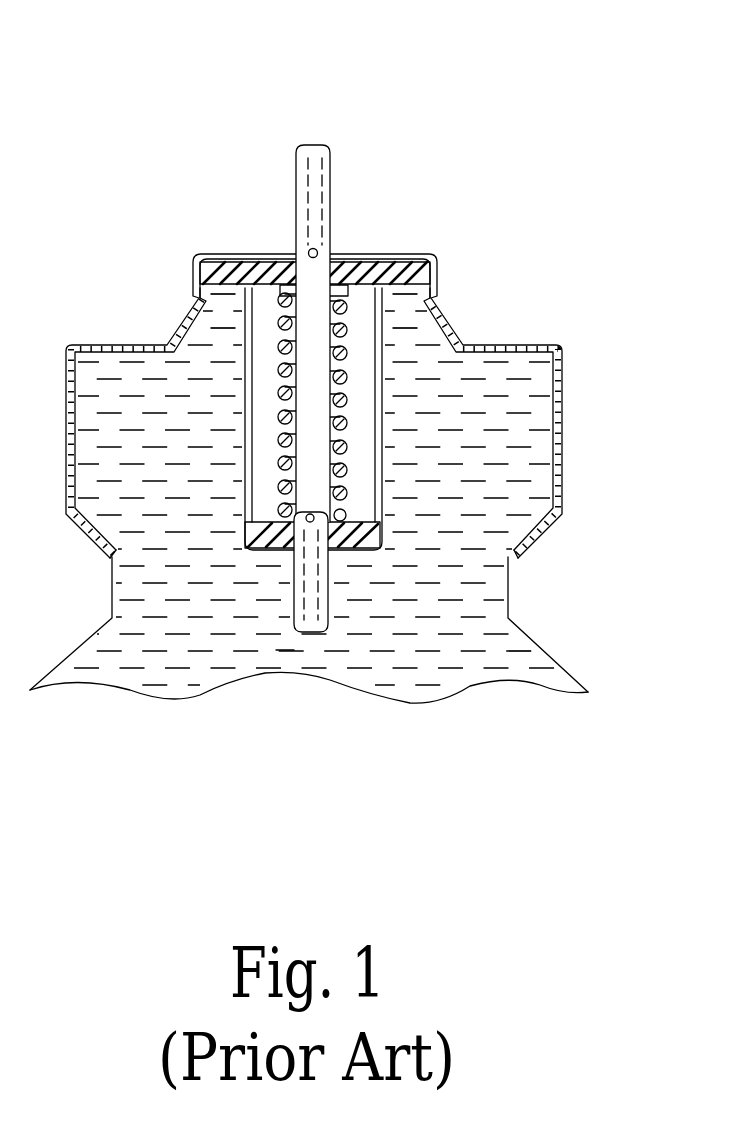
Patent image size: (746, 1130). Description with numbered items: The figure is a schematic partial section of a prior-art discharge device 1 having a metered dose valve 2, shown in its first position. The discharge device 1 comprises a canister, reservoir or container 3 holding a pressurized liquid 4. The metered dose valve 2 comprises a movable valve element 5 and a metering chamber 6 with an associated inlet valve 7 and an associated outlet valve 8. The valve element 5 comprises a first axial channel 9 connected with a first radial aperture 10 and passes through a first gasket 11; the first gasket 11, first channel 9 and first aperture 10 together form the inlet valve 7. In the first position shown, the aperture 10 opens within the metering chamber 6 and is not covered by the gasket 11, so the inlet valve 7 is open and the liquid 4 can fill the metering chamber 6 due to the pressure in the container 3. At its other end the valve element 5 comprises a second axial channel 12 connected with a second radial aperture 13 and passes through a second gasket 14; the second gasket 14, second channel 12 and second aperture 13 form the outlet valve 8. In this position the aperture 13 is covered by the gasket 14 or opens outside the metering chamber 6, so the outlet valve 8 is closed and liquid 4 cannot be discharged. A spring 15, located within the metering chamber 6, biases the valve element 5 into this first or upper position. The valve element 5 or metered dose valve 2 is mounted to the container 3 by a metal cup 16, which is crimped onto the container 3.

The discharge device 1 is at (120, 207).
The metered dose valve 2 is at (388, 382).
The container 3 is at (560, 658).
The pressurized liquid 4 is at (447, 670).
The valve element 5 is at (317, 457).
The metering chamber 6 is at (372, 465).
The inlet valve 7 is at (387, 545).
The outlet valve 8 is at (337, 240).
The first axial channel 9 is at (284, 648).
The first radial aperture 10 is at (244, 550).
The first gasket 11 is at (247, 545).
The second axial channel 12 is at (297, 190).
The second radial aperture 13 is at (305, 243).
The second gasket 14 is at (230, 256).
The spring 15 is at (282, 418).
The metal cup 16 is at (543, 348).